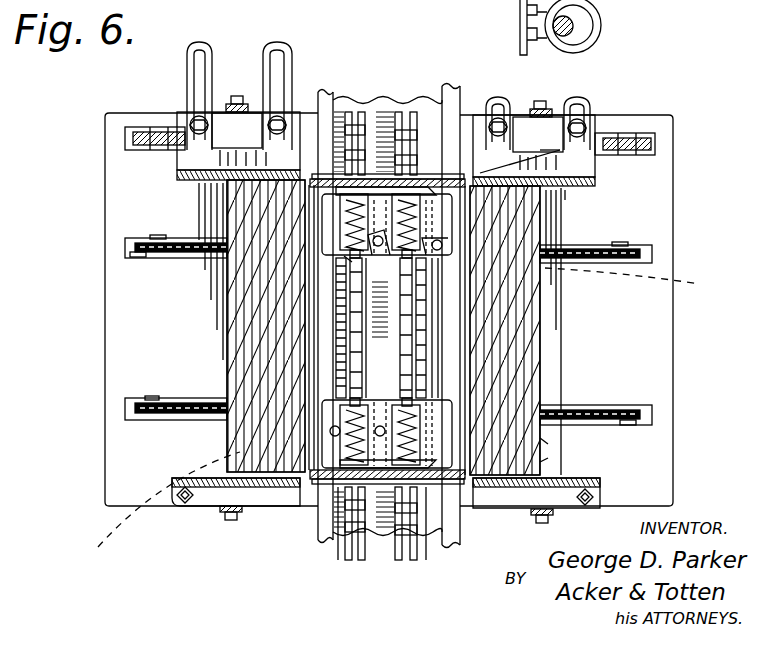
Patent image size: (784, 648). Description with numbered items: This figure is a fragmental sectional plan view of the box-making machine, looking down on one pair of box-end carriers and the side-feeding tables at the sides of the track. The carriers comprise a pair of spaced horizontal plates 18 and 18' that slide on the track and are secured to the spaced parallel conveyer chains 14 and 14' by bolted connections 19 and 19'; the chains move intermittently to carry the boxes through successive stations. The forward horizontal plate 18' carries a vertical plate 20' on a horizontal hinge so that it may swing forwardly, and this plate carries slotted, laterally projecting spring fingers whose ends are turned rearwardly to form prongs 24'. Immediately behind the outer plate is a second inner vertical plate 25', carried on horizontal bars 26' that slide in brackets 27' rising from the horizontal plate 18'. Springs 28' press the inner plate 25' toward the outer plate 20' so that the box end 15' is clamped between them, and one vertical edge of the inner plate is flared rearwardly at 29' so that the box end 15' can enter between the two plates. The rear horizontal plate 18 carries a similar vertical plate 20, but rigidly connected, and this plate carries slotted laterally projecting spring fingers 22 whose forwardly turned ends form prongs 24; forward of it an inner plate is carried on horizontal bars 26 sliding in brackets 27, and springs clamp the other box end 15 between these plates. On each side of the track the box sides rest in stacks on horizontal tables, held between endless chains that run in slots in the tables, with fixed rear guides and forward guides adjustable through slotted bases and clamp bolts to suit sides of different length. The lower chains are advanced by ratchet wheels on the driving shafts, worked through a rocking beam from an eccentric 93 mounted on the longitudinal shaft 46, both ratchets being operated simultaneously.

The conveyer chain 14 is at (264, 328).
The conveyer chain 14' is at (516, 328).
The end shook 15 is at (369, 545).
The end shook 15' is at (171, 268).
The horizontal carrier plate 18 is at (238, 396).
The horizontal carrier plate 18' is at (605, 330).
The bolted connection 19 is at (147, 506).
The bolted connection 19' is at (640, 279).
The vertical plate 20 is at (375, 556).
The vertical plate 20' is at (385, 118).
The spring finger 22 is at (391, 487).
The prong 24 is at (593, 464).
The prong 24' is at (540, 134).
The inner vertical plate 25' is at (381, 228).
The horizontal bar 26 is at (313, 415).
The horizontal bar 26' is at (310, 224).
The bracket 27 is at (561, 434).
The bracket 27' is at (271, 271).
The spring 28' is at (592, 191).
The flared edge 29' is at (520, 161).
The longitudinal shaft 46 is at (574, 32).
The eccentric 93 is at (584, 18).